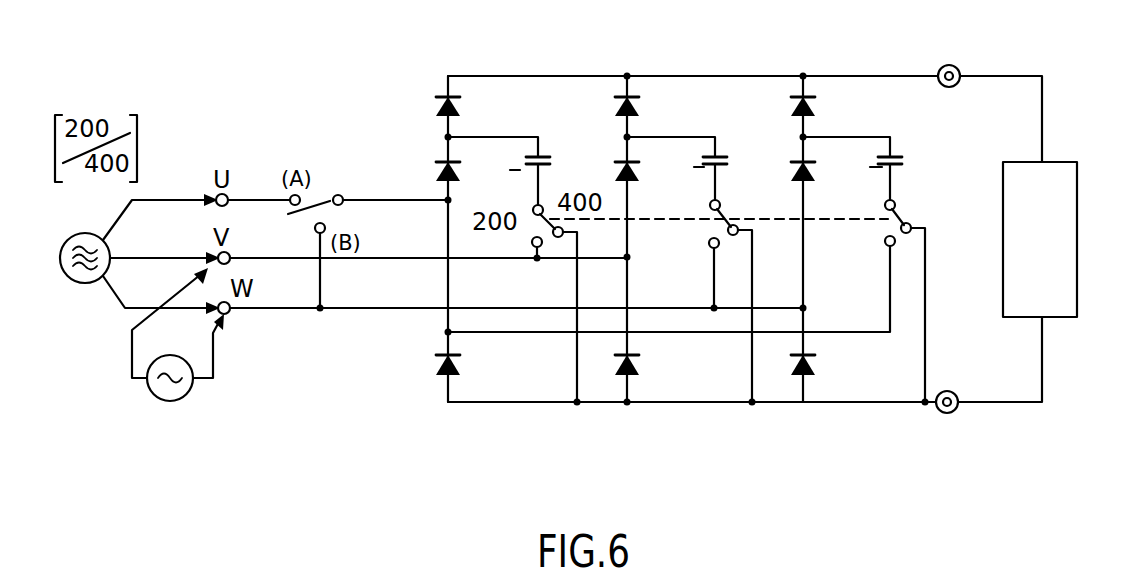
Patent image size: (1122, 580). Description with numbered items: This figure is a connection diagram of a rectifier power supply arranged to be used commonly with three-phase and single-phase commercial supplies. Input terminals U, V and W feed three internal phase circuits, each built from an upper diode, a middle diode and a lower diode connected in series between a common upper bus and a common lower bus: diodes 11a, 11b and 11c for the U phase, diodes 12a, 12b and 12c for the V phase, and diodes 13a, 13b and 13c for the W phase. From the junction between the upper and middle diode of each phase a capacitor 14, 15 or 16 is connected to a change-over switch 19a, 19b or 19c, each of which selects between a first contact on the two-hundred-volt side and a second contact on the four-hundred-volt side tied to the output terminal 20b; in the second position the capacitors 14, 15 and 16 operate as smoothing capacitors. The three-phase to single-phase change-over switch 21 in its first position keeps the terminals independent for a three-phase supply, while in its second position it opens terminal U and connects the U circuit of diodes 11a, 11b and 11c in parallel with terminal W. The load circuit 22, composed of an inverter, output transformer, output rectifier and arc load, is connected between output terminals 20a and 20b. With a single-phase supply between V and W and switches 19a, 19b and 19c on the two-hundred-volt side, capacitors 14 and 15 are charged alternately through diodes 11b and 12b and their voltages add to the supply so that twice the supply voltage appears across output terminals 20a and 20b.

The diode 11a is at (441, 110).
The diode 11b is at (441, 172).
The diode 11c is at (438, 369).
The diode 12a is at (636, 110).
The diode 12b is at (640, 177).
The diode 12c is at (640, 367).
The diode 13a is at (812, 110).
The diode 13b is at (816, 177).
The diode 13c is at (814, 366).
The capacitor 14 is at (553, 163).
The capacitor 15 is at (729, 163).
The capacitor 16 is at (905, 163).
The change-over switch 19a is at (541, 262).
The change-over switch 19b is at (711, 262).
The change-over switch 19c is at (890, 259).
The output terminal 20a is at (949, 64).
The output terminal 20b is at (946, 414).
The three-phase to single-phase change-over switch 21 is at (323, 198).
The load circuit 22 is at (1057, 178).